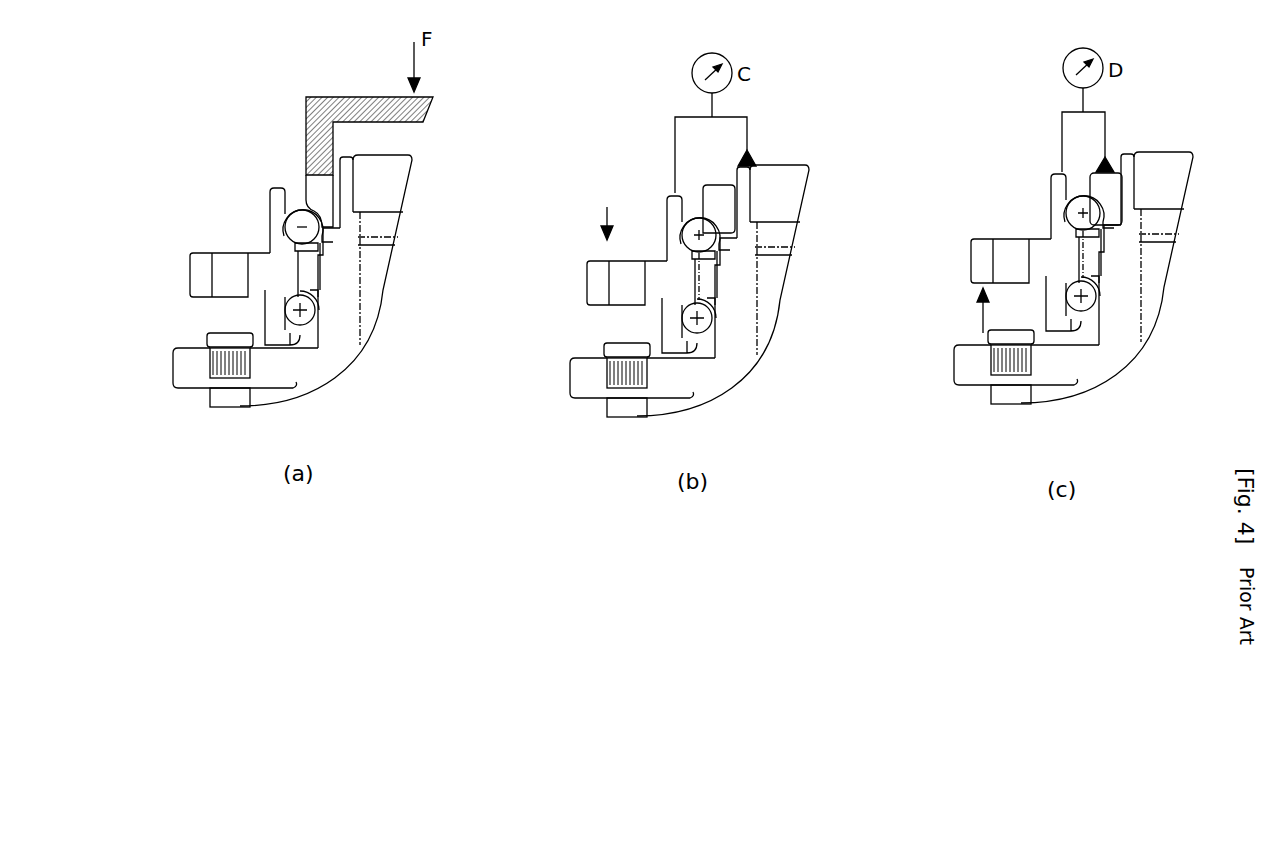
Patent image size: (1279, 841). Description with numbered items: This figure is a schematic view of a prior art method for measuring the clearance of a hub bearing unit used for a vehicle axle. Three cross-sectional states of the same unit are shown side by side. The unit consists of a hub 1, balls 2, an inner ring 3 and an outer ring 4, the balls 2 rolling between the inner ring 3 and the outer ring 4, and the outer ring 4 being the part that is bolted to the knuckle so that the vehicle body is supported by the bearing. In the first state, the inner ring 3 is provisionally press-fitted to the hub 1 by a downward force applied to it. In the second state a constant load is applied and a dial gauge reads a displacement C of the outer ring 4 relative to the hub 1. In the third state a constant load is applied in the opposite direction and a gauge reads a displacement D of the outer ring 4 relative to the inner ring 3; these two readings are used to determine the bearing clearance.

The hub 1 is at (322, 370).
The balls 2 is at (293, 220).
The inner ring 3 is at (317, 188).
The outer ring 4 is at (266, 290).